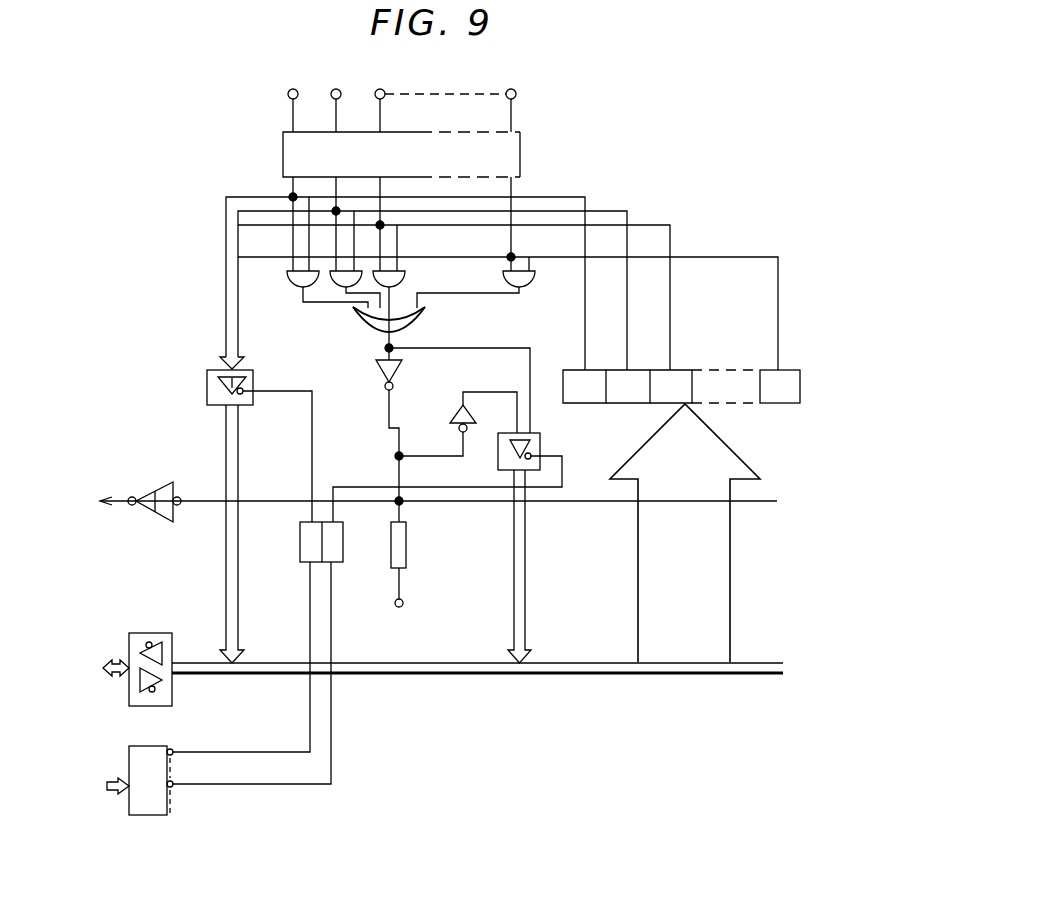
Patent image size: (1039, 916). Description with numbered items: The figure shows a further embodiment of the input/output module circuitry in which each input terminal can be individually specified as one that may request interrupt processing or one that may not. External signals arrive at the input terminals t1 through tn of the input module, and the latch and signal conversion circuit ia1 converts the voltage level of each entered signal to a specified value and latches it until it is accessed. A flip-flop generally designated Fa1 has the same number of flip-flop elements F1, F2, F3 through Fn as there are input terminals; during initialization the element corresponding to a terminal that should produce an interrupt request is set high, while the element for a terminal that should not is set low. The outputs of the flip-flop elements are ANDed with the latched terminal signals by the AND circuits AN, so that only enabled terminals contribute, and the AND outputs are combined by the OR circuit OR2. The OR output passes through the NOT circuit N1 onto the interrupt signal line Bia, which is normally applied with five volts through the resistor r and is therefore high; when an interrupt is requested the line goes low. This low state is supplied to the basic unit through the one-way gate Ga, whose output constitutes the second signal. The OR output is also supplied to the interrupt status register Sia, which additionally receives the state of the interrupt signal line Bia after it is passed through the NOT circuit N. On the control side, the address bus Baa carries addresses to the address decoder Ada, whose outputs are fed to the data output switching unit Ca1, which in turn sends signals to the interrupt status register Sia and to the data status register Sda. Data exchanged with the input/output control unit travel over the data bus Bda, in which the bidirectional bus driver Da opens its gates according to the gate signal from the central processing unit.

The external signal input terminal t1 is at (291, 100).
The external signal input terminal tn is at (511, 100).
The latch and signal conversion circuit ia1 is at (401, 154).
The AND circuit AN is at (330, 309).
The OR circuit OR2 is at (403, 323).
The NOT circuit N1 is at (401, 441).
The NOT circuit N is at (458, 424).
The interrupt status register Sia is at (541, 440).
The data status register Sda is at (259, 510).
The interrupt signal line Bia is at (198, 503).
The one-way gate Ga is at (154, 491).
The data output switching unit Ca1 is at (343, 530).
The resistor r is at (407, 528).
The flip-flop Fa1 is at (699, 376).
The flip-flop element F1 is at (584, 386).
The flip-flop element F2 is at (628, 386).
The flip-flop element F3 is at (671, 386).
The flip-flop element Fn is at (808, 358).
The data bus Bda is at (204, 668).
The bidirectional bus driver Da is at (172, 640).
The address decoder Ada is at (151, 780).
The address bus Baa is at (108, 792).